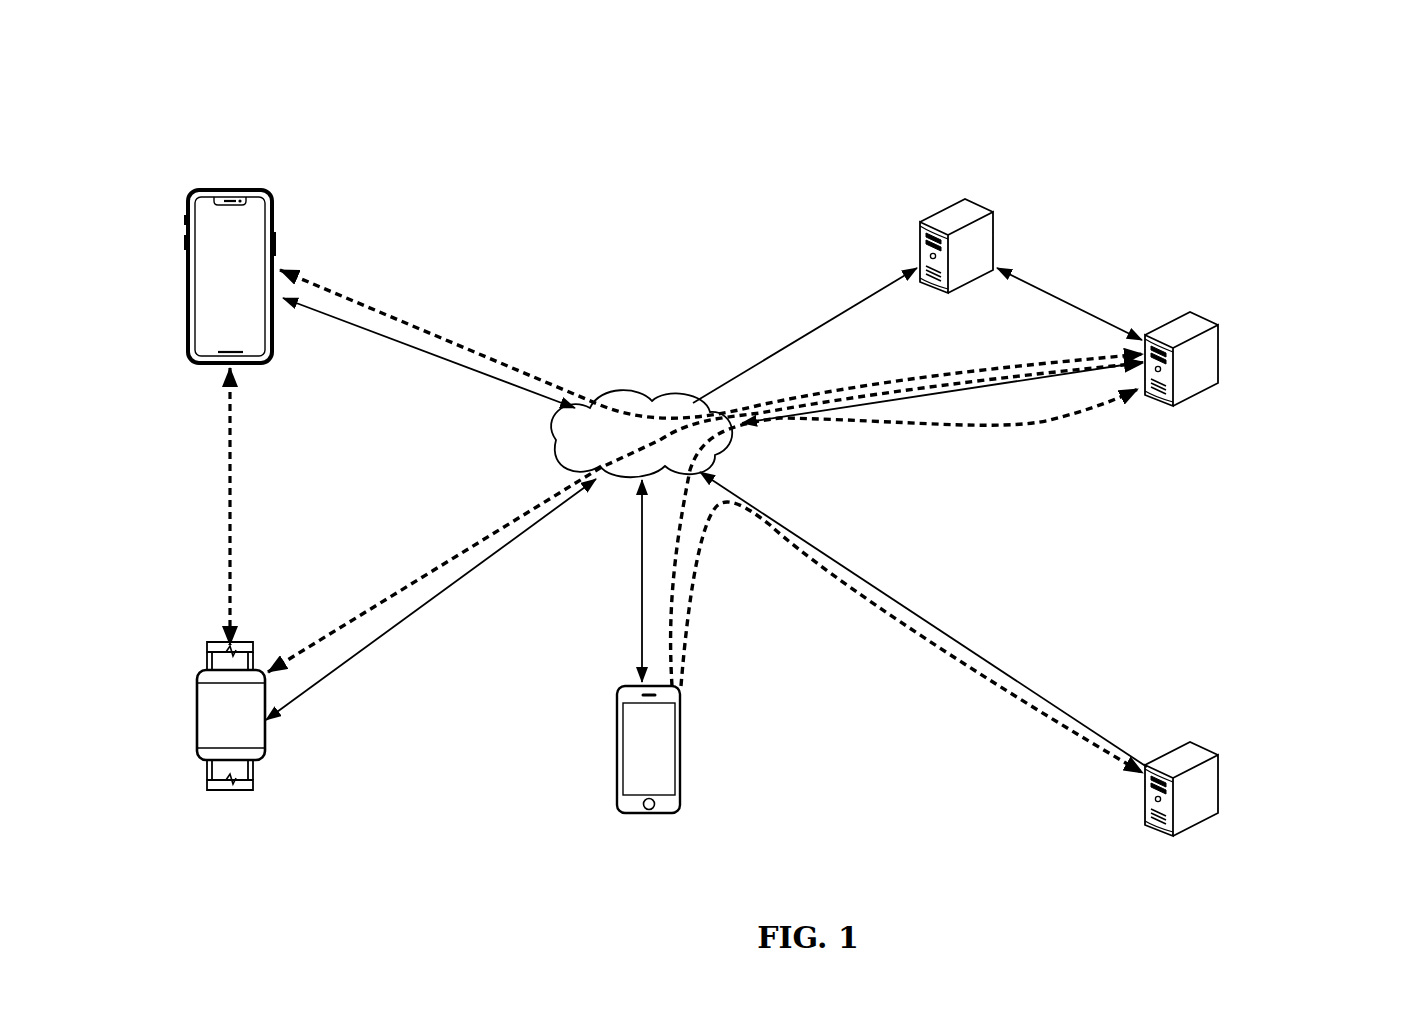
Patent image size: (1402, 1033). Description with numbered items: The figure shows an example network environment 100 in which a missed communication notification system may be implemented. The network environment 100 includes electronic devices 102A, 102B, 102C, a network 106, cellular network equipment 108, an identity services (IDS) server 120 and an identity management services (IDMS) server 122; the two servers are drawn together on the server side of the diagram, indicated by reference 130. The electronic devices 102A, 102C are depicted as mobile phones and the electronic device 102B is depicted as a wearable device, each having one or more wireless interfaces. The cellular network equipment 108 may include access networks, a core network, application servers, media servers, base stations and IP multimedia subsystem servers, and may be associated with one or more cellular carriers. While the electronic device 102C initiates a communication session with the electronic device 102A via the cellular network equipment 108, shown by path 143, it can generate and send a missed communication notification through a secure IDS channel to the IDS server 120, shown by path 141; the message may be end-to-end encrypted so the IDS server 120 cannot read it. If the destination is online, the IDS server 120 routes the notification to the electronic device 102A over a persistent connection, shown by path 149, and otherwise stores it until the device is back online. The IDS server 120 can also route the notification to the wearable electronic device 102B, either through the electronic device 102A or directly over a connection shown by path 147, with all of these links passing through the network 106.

The network environment 100 is at (312, 100).
The electronic device 102A is at (275, 233).
The electronic device 102B is at (197, 716).
The electronic device 102C is at (681, 755).
The network 106 is at (640, 396).
The cellular network equipment 108 is at (1198, 748).
The identity services (IDS) server 120 is at (1157, 334).
The identity management services (IDMS) server 122 is at (966, 200).
The server-side system 130 is at (870, 176).
The path 141 is at (869, 428).
The path 143 is at (957, 665).
The path 147 is at (460, 545).
The path 149 is at (452, 345).